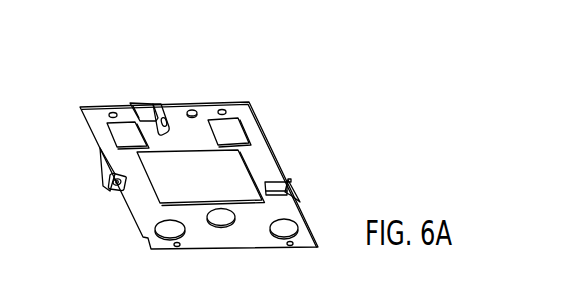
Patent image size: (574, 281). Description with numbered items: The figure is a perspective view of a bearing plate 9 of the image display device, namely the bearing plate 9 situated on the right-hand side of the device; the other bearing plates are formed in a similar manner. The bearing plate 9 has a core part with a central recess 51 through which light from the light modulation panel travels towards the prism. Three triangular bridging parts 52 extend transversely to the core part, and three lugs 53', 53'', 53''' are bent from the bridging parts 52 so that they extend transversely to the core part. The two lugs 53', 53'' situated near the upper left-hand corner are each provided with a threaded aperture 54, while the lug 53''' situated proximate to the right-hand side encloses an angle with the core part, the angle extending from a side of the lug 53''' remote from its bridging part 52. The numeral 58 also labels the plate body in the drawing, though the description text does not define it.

The bearing plate 9 is at (241, 80).
The mounting plate 58 is at (97, 116).
The central recess 51 is at (229, 170).
The triangular bridging part 52 is at (137, 110).
The threaded aperture 54 is at (160, 112).
The lug 53' is at (112, 209).
The lug 53'' is at (178, 95).
The lug 53''' is at (290, 164).